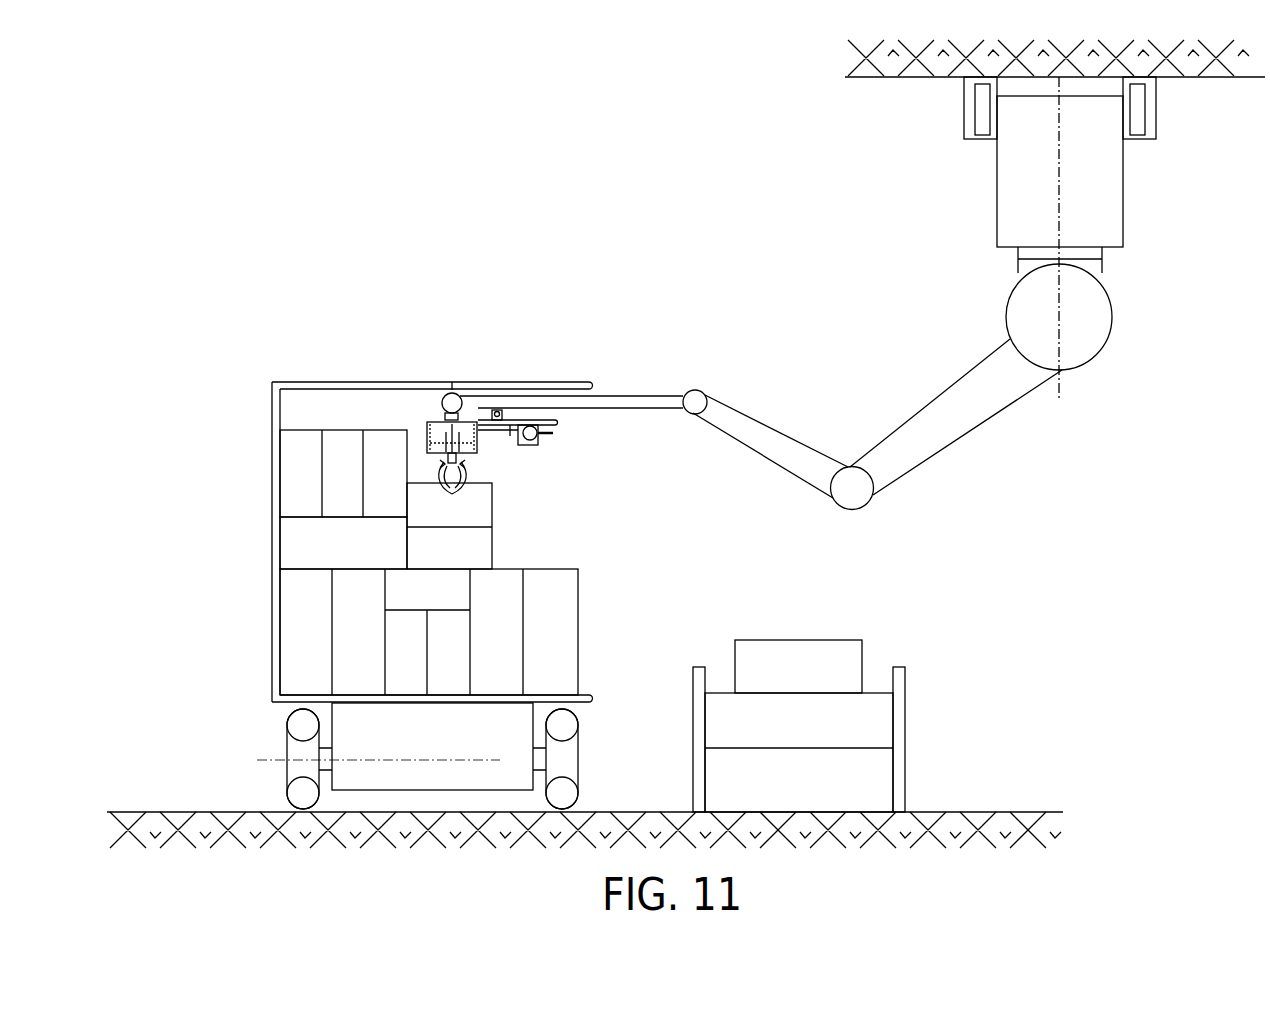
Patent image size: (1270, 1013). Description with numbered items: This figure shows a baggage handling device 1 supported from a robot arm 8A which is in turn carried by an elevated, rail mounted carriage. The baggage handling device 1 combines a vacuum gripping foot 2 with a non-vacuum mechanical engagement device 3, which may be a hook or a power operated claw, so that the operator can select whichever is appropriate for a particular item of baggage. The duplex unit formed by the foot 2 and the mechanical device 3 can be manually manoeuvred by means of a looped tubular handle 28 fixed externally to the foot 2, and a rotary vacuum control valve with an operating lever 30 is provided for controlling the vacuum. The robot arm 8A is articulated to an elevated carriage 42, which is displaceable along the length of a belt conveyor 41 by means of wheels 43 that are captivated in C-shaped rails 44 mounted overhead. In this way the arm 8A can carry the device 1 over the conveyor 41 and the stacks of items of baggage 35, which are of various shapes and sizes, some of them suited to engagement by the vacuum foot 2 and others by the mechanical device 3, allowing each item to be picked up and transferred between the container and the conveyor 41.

The baggage handling device 1 is at (761, 410).
The vacuum gripping foot 2 is at (417, 423).
The mechanical engagement device 3 is at (467, 467).
The robot arm 8A is at (725, 412).
The looped tubular handle 28 is at (563, 425).
The operating lever 30 is at (548, 440).
The items of baggage 35 is at (482, 538).
The belt conveyor 41 is at (720, 688).
The elevated carriage 42 is at (1117, 180).
The wheels 43 is at (992, 128).
The C-shaped rails 44 is at (962, 114).